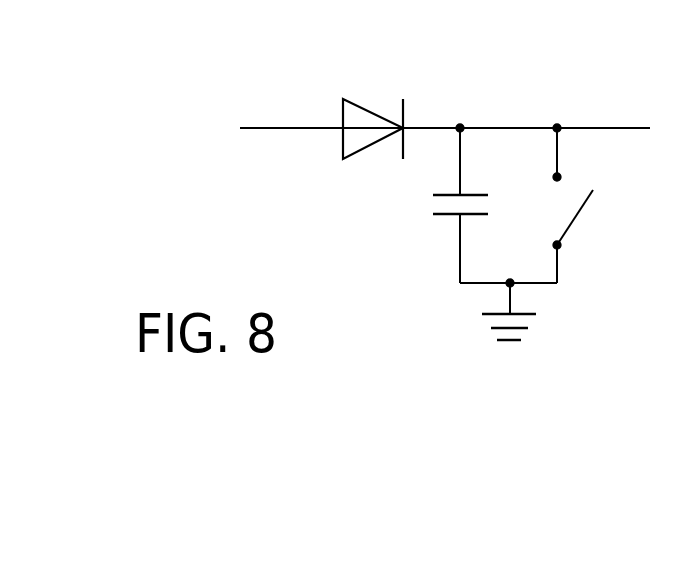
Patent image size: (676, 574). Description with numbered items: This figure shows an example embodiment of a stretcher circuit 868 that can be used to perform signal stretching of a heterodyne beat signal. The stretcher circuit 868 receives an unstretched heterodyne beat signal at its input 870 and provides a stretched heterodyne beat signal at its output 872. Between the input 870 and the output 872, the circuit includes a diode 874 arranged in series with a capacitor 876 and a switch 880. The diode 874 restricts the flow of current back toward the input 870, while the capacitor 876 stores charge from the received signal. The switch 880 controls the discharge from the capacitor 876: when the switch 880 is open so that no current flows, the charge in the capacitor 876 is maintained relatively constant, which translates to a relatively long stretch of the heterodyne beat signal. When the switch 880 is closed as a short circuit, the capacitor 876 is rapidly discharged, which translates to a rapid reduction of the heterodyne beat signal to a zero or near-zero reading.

The stretcher circuit 868 is at (253, 195).
The input 870 is at (267, 127).
The output 872 is at (617, 127).
The diode 874 is at (357, 97).
The capacitor 876 is at (440, 217).
The switch 880 is at (580, 217).